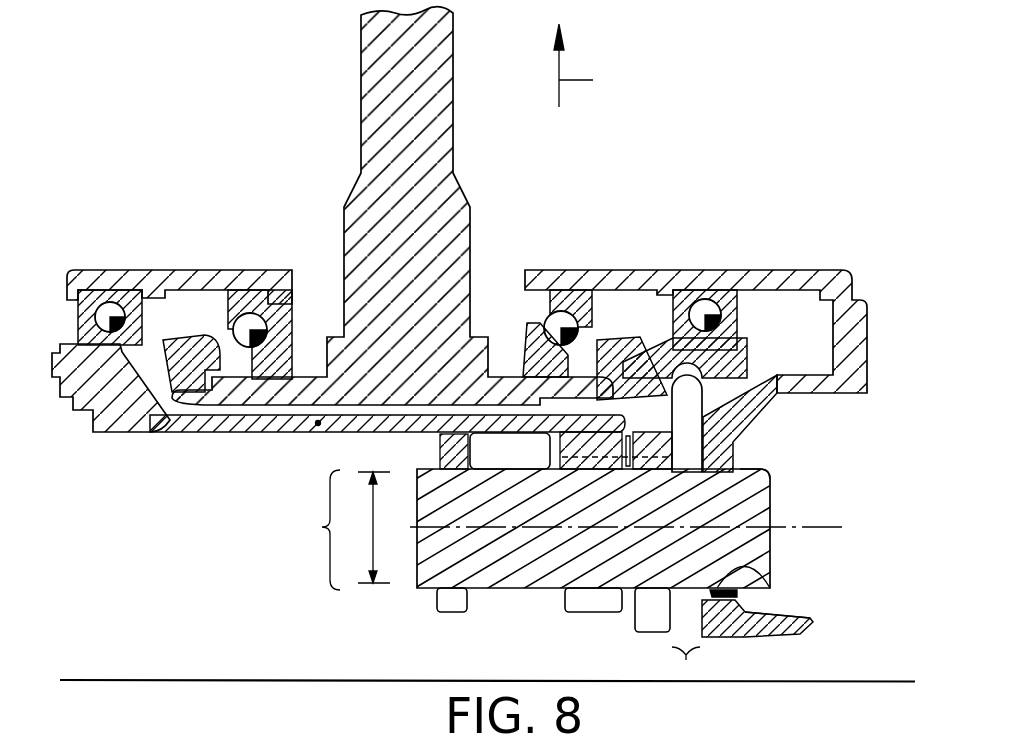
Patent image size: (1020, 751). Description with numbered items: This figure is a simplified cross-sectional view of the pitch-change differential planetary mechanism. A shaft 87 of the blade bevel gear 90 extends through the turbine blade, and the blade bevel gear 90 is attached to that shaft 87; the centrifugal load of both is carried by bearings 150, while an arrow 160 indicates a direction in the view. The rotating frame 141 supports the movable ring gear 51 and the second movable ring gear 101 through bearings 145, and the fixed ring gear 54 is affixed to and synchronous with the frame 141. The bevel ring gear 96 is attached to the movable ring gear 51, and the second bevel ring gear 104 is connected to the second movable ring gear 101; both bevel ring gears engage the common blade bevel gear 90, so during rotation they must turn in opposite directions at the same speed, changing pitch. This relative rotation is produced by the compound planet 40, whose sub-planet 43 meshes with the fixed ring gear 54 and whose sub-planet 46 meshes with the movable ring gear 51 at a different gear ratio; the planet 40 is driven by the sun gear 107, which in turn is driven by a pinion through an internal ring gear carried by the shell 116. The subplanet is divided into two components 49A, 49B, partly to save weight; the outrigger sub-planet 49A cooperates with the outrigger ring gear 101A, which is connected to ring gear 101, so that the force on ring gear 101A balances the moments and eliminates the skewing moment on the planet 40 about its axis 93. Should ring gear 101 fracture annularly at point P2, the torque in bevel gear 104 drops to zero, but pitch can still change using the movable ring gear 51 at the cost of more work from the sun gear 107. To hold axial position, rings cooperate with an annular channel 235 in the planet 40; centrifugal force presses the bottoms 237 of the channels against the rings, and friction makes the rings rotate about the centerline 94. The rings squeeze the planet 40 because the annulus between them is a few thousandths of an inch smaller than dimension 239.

The shaft 87 is at (444, 81).
The direction arrow 160 is at (596, 65).
The rotating frame 141 is at (218, 270).
The bearings 145 is at (112, 305).
The bearings 150 is at (248, 322).
The blade bevel gear 90 is at (243, 393).
The second bevel ring gear 104 is at (117, 387).
The bevel ring gear 96 is at (735, 362).
The fixed ring gear 54 is at (738, 437).
The movable ring gear 51 is at (676, 398).
The point P2 is at (318, 425).
The outrigger ring gear 101A is at (412, 434).
The second movable ring gear 101 is at (552, 434).
The compound planet 40 is at (322, 527).
The bottoms of the channels 237 is at (758, 470).
The sub-planet 43 is at (763, 563).
The sun gear 107 is at (745, 605).
The shell 116 is at (752, 628).
The outrigger sub-planet 49A is at (455, 612).
The sub-planet component 49B is at (588, 612).
The sub-planet 46 is at (655, 627).
The annular channel 235 is at (692, 660).
The dimension 239 is at (373, 563).
The axis 93 is at (810, 527).
The centerline 94 is at (838, 680).